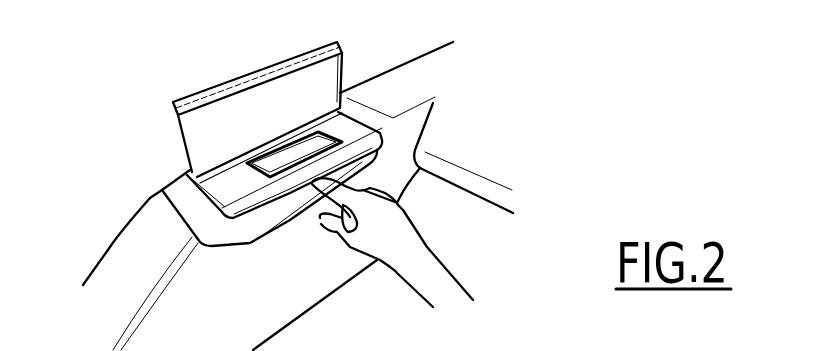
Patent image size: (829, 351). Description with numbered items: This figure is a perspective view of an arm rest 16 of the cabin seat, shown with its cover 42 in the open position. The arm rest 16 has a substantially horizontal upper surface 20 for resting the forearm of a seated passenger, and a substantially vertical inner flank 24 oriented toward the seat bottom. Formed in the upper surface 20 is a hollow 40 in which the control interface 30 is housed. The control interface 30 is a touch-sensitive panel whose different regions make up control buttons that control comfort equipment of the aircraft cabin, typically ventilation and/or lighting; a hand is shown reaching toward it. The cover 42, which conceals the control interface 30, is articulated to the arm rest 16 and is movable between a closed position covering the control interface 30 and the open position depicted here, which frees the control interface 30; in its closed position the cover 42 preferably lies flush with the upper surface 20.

The arm rest 16 is at (137, 189).
The upper surface 20 is at (369, 95).
The inner flank 24 is at (285, 253).
The control interface 30 is at (297, 147).
The hollow 40 is at (228, 206).
The cover 42 is at (217, 115).